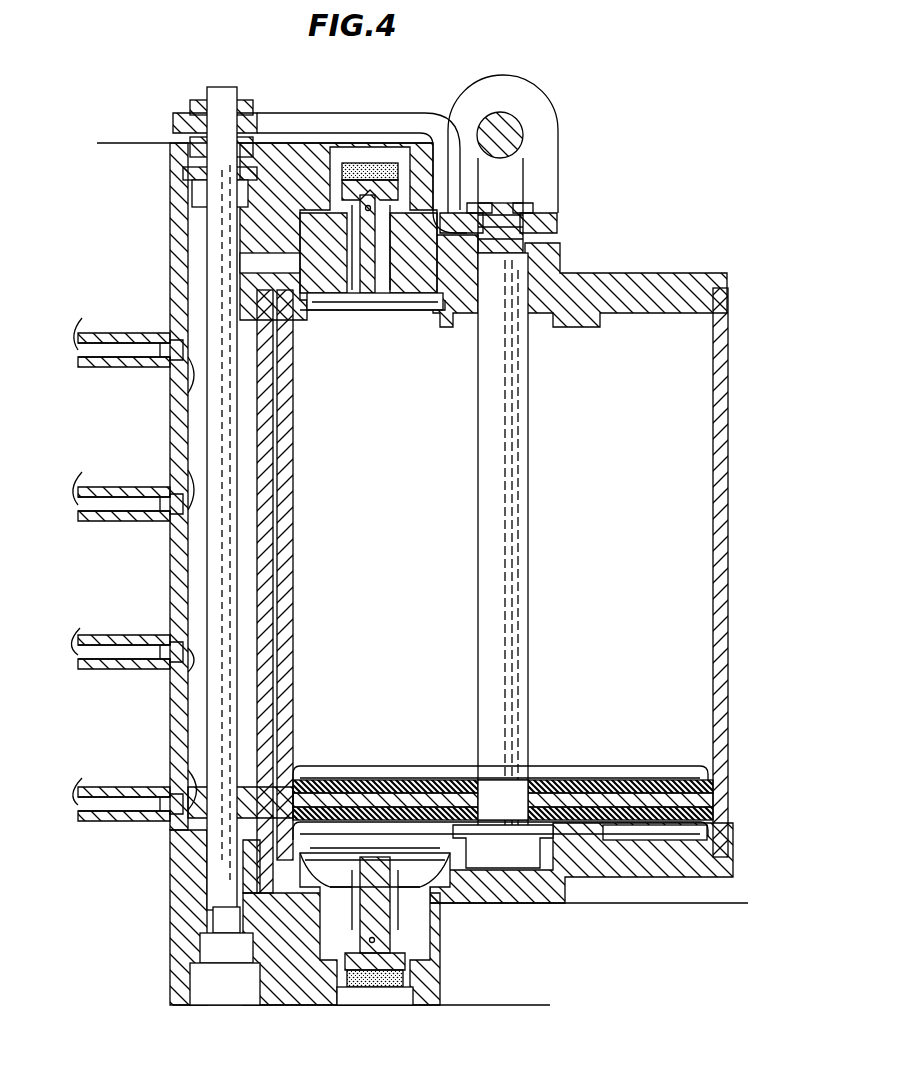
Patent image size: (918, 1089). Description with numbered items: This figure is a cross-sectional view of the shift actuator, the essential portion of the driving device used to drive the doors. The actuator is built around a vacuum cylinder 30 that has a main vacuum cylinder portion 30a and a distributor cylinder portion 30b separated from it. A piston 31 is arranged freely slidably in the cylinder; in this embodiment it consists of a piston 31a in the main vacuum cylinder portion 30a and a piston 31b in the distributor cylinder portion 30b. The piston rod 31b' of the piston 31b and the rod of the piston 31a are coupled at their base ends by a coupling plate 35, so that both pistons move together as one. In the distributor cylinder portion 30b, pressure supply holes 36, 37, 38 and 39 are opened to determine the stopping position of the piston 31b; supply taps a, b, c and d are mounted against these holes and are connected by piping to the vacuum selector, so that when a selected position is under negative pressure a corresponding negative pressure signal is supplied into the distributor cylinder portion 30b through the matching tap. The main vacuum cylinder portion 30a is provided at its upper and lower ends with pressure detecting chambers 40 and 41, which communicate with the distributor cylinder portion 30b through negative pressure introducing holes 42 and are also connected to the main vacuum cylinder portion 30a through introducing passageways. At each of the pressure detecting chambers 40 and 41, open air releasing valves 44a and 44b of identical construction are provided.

The vacuum cylinder 30 is at (733, 495).
The main vacuum cylinder portion 30a is at (728, 420).
The distributor cylinder portion 30b is at (186, 549).
The piston 31 is at (650, 830).
The piston 31a is at (518, 647).
The piston 31b is at (408, 817).
The piston rod 31b' is at (179, 546).
The coupling plate 35 is at (395, 124).
The pressure supply hole 36 is at (195, 800).
The pressure supply hole 37 is at (195, 655).
The pressure supply hole 38 is at (193, 507).
The pressure supply hole 39 is at (193, 368).
The pressure detecting chamber 40 is at (413, 905).
The pressure detecting chamber 41 is at (407, 233).
The negative pressure introducing hole 42 is at (286, 263).
The open air releasing valve 44a is at (377, 925).
The open air releasing valve 44b is at (323, 220).